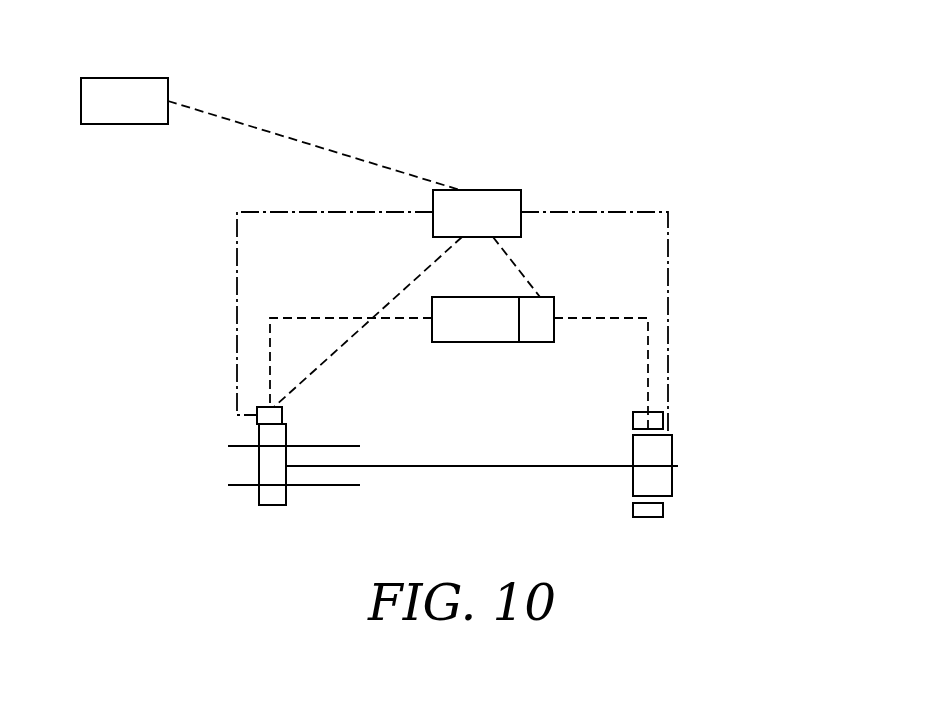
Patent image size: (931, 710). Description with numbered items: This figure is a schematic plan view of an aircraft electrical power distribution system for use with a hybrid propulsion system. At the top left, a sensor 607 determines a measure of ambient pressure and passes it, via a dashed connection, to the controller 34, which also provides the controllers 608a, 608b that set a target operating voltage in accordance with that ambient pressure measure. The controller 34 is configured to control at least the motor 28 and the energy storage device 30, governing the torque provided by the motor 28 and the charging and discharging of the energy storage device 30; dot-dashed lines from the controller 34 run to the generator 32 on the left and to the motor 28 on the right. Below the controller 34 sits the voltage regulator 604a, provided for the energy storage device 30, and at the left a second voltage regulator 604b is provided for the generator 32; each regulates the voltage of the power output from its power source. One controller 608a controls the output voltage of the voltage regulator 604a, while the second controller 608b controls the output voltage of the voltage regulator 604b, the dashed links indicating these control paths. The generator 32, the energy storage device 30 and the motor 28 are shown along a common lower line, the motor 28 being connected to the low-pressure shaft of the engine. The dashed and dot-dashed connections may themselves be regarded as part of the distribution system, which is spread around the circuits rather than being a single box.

The sensor 607 is at (123, 78).
The controller 34 is at (478, 190).
The controller 608a is at (477, 213).
The controller 608b is at (477, 213).
The voltage regulator 604a is at (540, 297).
The voltage regulator 604b is at (258, 407).
The generator 32 is at (270, 505).
The energy storage device 30 is at (475, 342).
The motor 28 is at (677, 480).